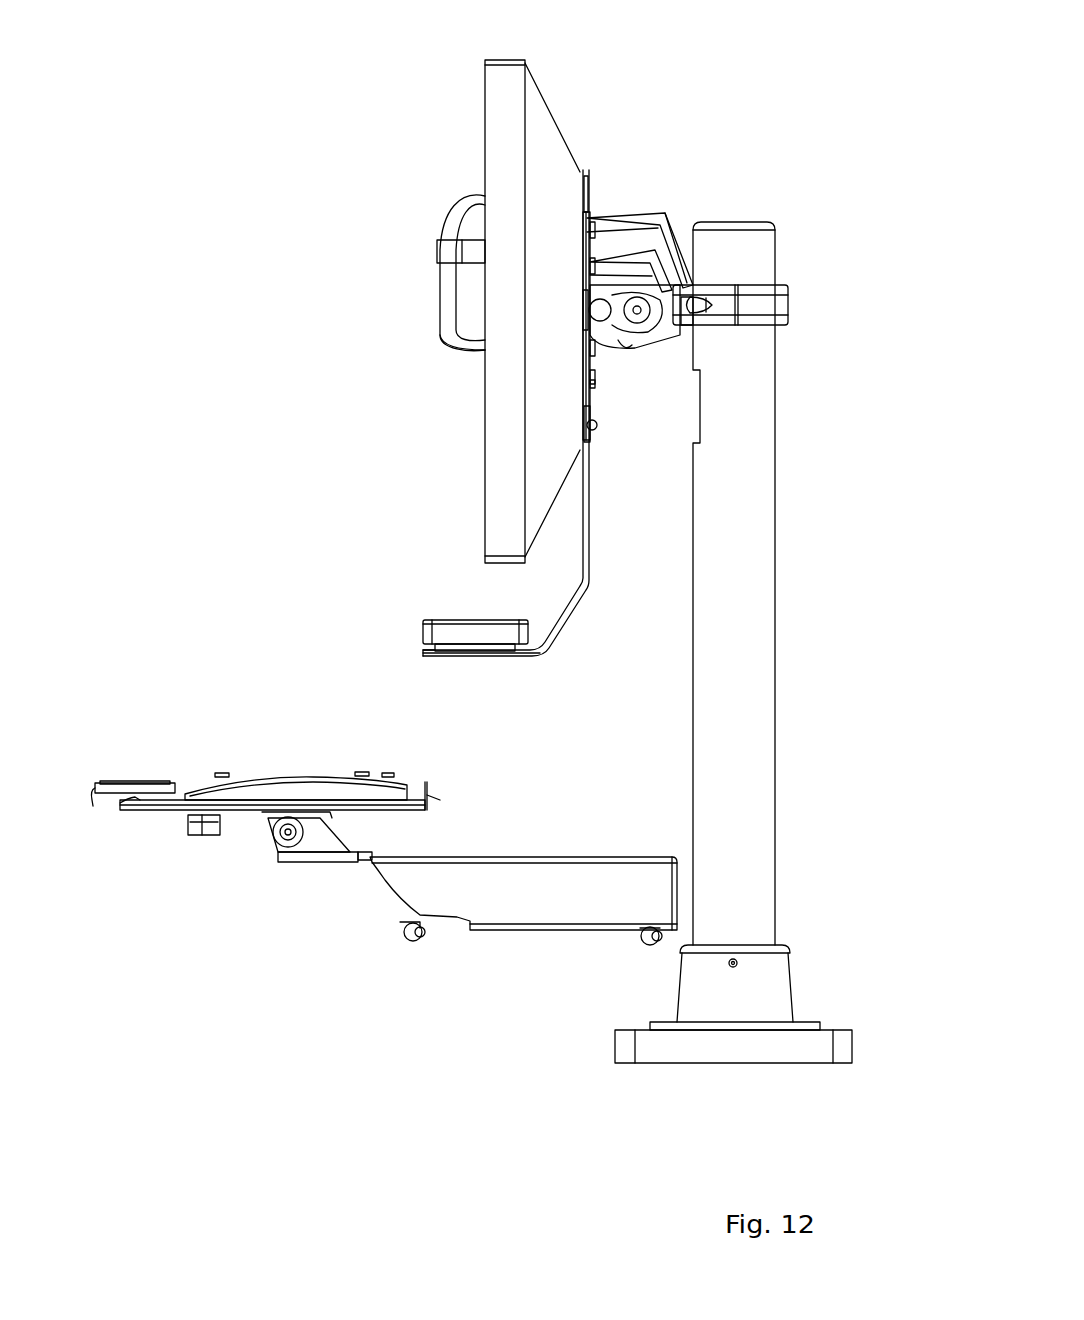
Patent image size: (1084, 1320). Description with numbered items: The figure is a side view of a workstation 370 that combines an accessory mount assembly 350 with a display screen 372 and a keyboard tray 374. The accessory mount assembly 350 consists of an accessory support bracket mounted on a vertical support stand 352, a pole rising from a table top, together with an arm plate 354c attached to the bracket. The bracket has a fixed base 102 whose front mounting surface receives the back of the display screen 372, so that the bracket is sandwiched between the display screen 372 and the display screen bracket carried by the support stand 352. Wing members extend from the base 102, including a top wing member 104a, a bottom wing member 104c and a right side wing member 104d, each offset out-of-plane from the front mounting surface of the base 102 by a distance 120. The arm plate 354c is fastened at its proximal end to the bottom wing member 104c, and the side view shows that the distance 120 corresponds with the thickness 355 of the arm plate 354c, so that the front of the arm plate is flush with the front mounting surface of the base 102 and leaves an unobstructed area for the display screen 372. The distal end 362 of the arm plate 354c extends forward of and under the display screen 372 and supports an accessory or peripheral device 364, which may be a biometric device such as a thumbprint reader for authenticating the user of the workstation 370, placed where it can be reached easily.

The base 102 is at (604, 222).
The top wing member 104a is at (593, 178).
The bottom wing member 104c is at (596, 408).
The right side wing member 104d is at (578, 300).
The distance 120 is at (580, 155).
The accessory mount assembly 350 is at (714, 154).
The support stand 352 is at (775, 458).
The arm plate 354c is at (600, 567).
The thickness 355 is at (552, 537).
The distal end 362 is at (422, 655).
The accessory or peripheral device 364 is at (455, 618).
The workstation 370 is at (663, 98).
The display screen 372 is at (484, 418).
The keyboard tray 374 is at (238, 815).